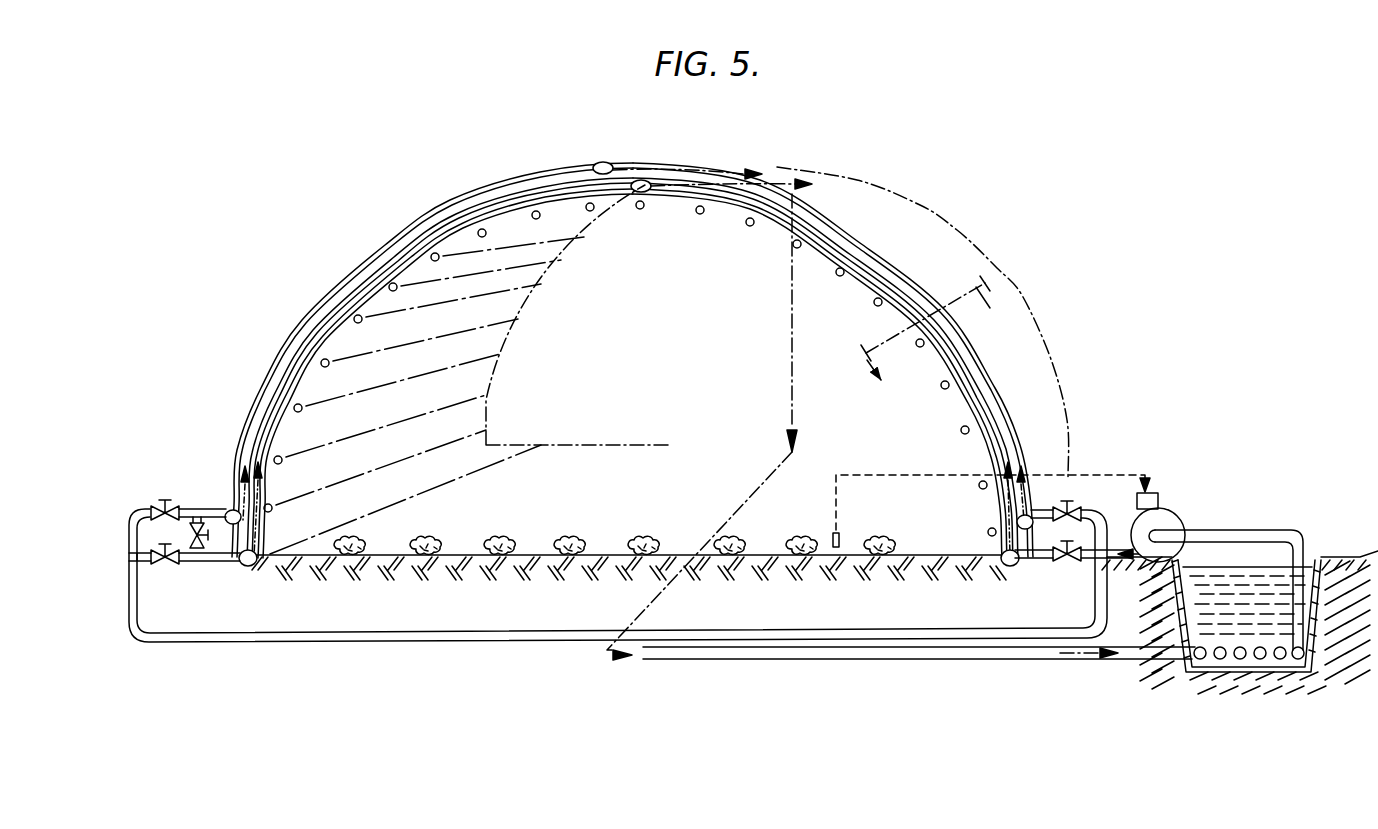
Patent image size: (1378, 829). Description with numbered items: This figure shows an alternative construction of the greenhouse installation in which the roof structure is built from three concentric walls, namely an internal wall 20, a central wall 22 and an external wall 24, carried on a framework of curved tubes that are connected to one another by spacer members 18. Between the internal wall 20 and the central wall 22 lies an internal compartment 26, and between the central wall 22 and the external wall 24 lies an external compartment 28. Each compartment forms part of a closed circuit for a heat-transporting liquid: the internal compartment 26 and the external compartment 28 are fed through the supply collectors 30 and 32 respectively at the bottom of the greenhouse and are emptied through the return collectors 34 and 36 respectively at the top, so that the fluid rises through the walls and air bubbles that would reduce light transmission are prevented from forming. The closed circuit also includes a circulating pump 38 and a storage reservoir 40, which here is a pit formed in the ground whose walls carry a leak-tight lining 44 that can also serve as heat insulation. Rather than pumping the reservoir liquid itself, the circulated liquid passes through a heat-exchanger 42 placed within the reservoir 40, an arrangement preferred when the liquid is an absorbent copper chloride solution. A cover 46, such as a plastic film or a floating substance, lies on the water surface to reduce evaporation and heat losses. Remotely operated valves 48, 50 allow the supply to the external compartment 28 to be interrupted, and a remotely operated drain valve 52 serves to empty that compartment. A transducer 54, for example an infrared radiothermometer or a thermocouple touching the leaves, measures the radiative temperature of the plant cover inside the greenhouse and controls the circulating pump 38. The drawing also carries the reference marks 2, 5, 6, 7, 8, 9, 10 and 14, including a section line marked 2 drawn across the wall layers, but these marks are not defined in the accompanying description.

The section line 2- 2 is at (930, 330).
The outer wall panel 5 is at (848, 246).
The wall layer 6 is at (407, 258).
The inner wall layer 7 is at (972, 408).
The outer wall layer 8 is at (999, 410).
The right base inlet 9 is at (1002, 568).
The right upper inlet 10 is at (1030, 533).
The dome structure 14 is at (322, 248).
The spacer members 18 is at (488, 235).
The internal wall 20 is at (757, 212).
The central wall 22 is at (431, 215).
The external wall 24 is at (304, 325).
The internal compartment 26 is at (300, 358).
The external compartment 28 is at (258, 414).
The supply collector 30 is at (257, 570).
The supply collector 32 is at (228, 530).
The return collector 34 is at (606, 165).
The return collector 36 is at (640, 190).
The circulating pump 38 is at (1178, 520).
The storage reservoir 40 is at (1232, 572).
The heat-exchanger 42 is at (1230, 649).
The leak-tight lining 44 is at (1178, 632).
The cover 46 is at (1321, 546).
The remotely operated valve 48 is at (1080, 508).
The remotely operated valve 50 is at (150, 482).
The remotely operated drain valve 52 is at (210, 520).
The transducer 54 is at (829, 530).